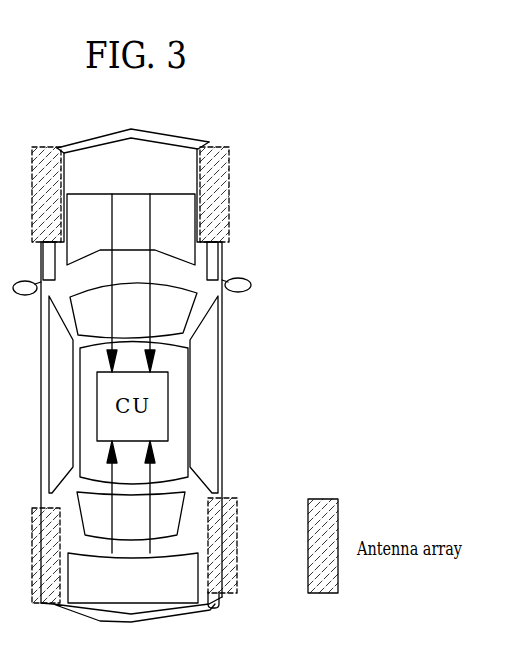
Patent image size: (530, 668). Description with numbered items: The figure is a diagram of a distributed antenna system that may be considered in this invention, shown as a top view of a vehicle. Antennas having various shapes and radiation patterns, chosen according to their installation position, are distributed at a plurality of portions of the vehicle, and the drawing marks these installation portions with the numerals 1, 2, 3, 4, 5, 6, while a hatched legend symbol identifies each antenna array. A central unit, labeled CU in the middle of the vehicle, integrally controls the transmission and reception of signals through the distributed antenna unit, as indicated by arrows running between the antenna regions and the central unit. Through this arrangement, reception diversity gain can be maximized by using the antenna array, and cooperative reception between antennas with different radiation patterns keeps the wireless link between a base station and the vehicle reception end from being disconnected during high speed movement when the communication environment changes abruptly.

The side mirror 1 is at (132, 286).
The trunk lid 2 is at (133, 578).
The engine hood 3 is at (131, 229).
The windshield / rear window 4 is at (133, 411).
The side door window 5 is at (133, 394).
The bumper 6 is at (131, 375).